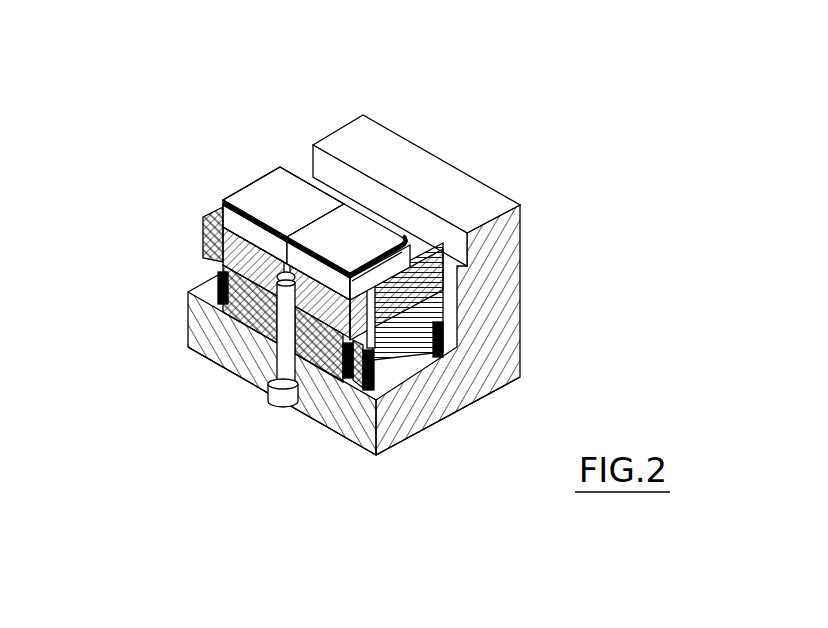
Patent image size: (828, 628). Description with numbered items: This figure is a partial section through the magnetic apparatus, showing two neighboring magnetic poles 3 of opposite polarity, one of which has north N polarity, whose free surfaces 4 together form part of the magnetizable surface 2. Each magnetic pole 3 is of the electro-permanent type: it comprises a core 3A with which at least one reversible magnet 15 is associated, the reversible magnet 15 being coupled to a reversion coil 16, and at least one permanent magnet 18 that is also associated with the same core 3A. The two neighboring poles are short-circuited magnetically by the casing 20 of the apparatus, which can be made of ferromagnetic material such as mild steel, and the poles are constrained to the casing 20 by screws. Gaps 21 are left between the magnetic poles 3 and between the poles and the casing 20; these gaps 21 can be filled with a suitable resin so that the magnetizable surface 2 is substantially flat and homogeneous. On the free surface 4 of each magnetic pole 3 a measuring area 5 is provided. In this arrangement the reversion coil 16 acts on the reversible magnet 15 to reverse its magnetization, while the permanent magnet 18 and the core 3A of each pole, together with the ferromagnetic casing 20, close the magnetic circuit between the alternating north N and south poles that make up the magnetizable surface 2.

The magnetizable surface 2 is at (282, 166).
The magnetic pole 3 is at (229, 188).
The core 3A is at (218, 273).
The free surface 4 is at (455, 236).
The measuring area 5 is at (260, 177).
The reversible magnet 15 is at (258, 313).
The reversion coil 16 is at (400, 440).
The permanent magnet 18 is at (427, 393).
The casing 20 is at (338, 415).
The gap 21 is at (380, 200).
The north polarity N is at (440, 296).